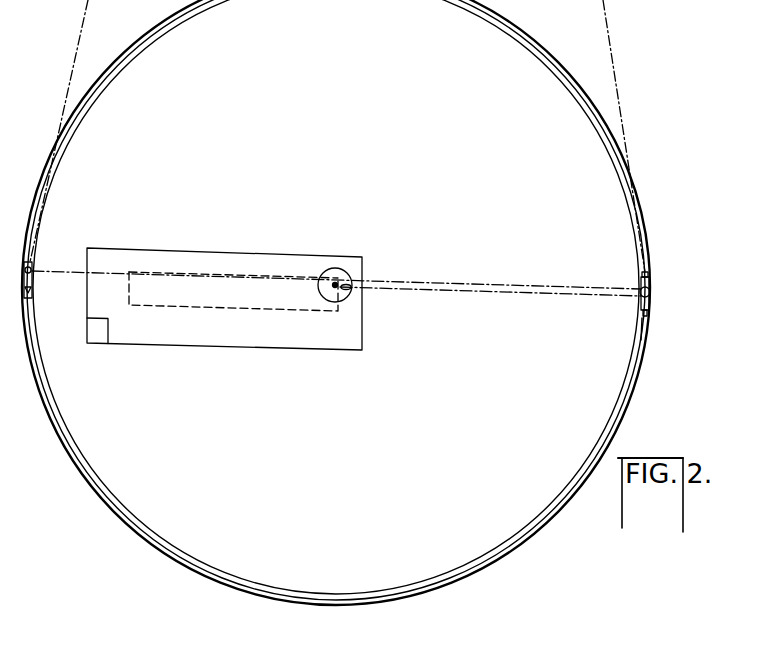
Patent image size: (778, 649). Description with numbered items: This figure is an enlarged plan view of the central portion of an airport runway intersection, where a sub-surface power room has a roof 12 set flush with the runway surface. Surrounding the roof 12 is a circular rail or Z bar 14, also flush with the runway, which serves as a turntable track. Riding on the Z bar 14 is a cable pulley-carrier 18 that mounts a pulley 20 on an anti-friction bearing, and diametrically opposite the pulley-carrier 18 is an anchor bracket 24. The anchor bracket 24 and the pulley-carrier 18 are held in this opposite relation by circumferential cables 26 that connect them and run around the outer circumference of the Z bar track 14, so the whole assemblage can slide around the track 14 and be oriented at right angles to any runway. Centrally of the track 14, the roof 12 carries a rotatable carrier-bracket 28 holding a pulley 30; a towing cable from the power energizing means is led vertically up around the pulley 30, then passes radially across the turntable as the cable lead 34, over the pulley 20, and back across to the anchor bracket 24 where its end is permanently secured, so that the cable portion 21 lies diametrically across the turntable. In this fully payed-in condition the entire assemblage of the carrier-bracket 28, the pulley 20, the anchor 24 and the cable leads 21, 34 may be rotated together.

The roof 12 is at (218, 347).
The circular rail or Z bar 14 is at (472, 566).
The cable pulley-carrier 18 is at (641, 280).
The pulley 20 is at (651, 292).
The cable portion 21 is at (407, 283).
The anchor bracket 24 is at (32, 283).
The circumferential cables 26 is at (646, 326).
The rotatable carrier-bracket 28 is at (338, 272).
The pulley 30 is at (347, 289).
The cable lead 34 is at (476, 292).